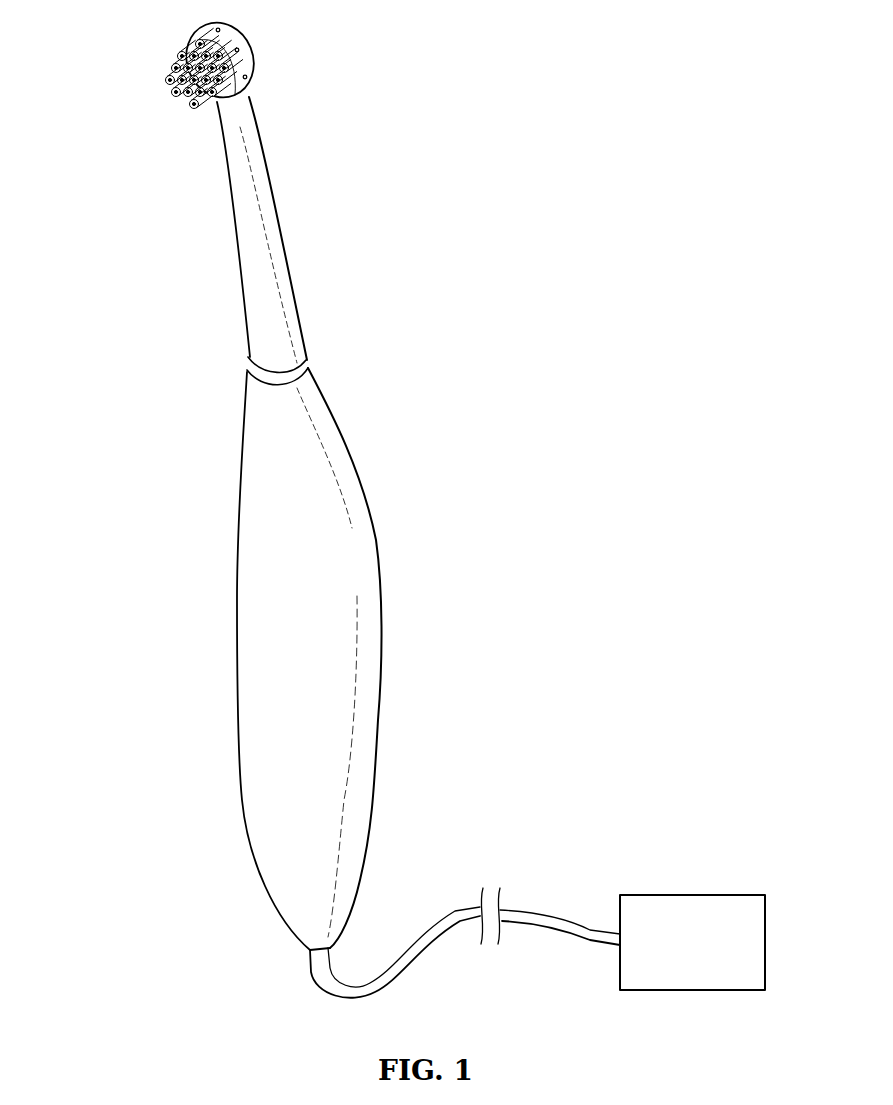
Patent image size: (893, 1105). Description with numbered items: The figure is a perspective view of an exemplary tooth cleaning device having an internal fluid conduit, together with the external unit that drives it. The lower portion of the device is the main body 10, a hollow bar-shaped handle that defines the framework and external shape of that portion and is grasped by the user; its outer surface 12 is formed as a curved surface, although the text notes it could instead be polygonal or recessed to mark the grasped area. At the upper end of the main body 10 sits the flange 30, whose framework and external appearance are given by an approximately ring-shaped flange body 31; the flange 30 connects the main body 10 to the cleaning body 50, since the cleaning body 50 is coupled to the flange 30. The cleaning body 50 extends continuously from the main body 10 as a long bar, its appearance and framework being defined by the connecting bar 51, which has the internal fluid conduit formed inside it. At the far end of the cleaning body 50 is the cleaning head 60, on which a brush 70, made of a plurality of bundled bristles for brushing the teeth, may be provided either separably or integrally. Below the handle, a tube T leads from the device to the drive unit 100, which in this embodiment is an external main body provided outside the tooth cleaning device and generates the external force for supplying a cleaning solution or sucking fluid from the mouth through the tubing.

The main body 10 is at (294, 481).
The outer surface 12 is at (245, 630).
The flange 30 is at (278, 342).
The flange body 31 is at (248, 370).
The cleaning body 50 is at (289, 230).
The connecting bar 51 is at (248, 224).
The cleaning head 60 is at (245, 42).
The brush 70 is at (172, 82).
The tube T is at (537, 915).
The drive unit 100 is at (690, 895).